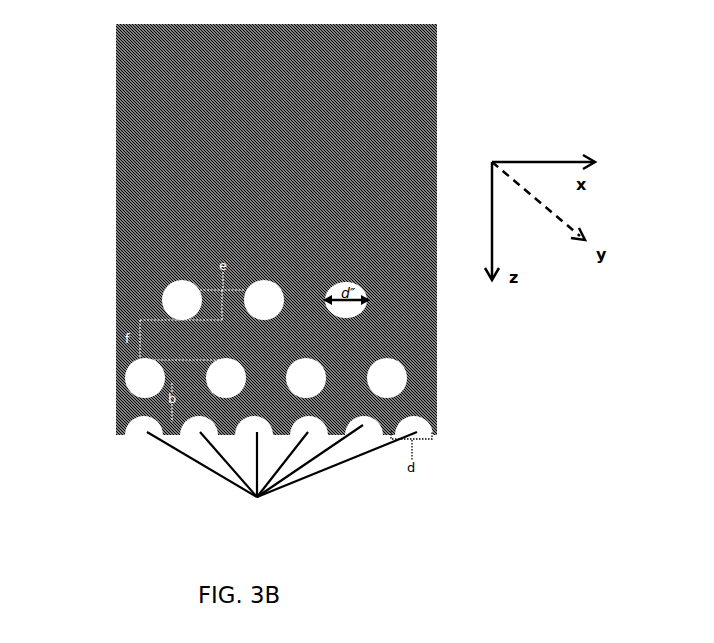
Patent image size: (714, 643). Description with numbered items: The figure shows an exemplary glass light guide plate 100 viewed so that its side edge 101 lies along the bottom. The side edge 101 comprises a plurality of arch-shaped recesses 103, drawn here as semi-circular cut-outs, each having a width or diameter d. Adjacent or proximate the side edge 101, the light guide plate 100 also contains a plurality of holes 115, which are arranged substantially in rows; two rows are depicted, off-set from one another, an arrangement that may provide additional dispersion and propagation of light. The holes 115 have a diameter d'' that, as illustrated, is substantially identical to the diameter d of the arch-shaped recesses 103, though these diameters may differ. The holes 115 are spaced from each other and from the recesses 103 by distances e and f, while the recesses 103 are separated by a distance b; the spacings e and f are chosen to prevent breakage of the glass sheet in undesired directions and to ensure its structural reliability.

The glass light guide plate 100 is at (297, 164).
The holes 115 is at (182, 300).
The arch-shaped recesses 103 is at (282, 478).
The side edge 101 is at (118, 447).